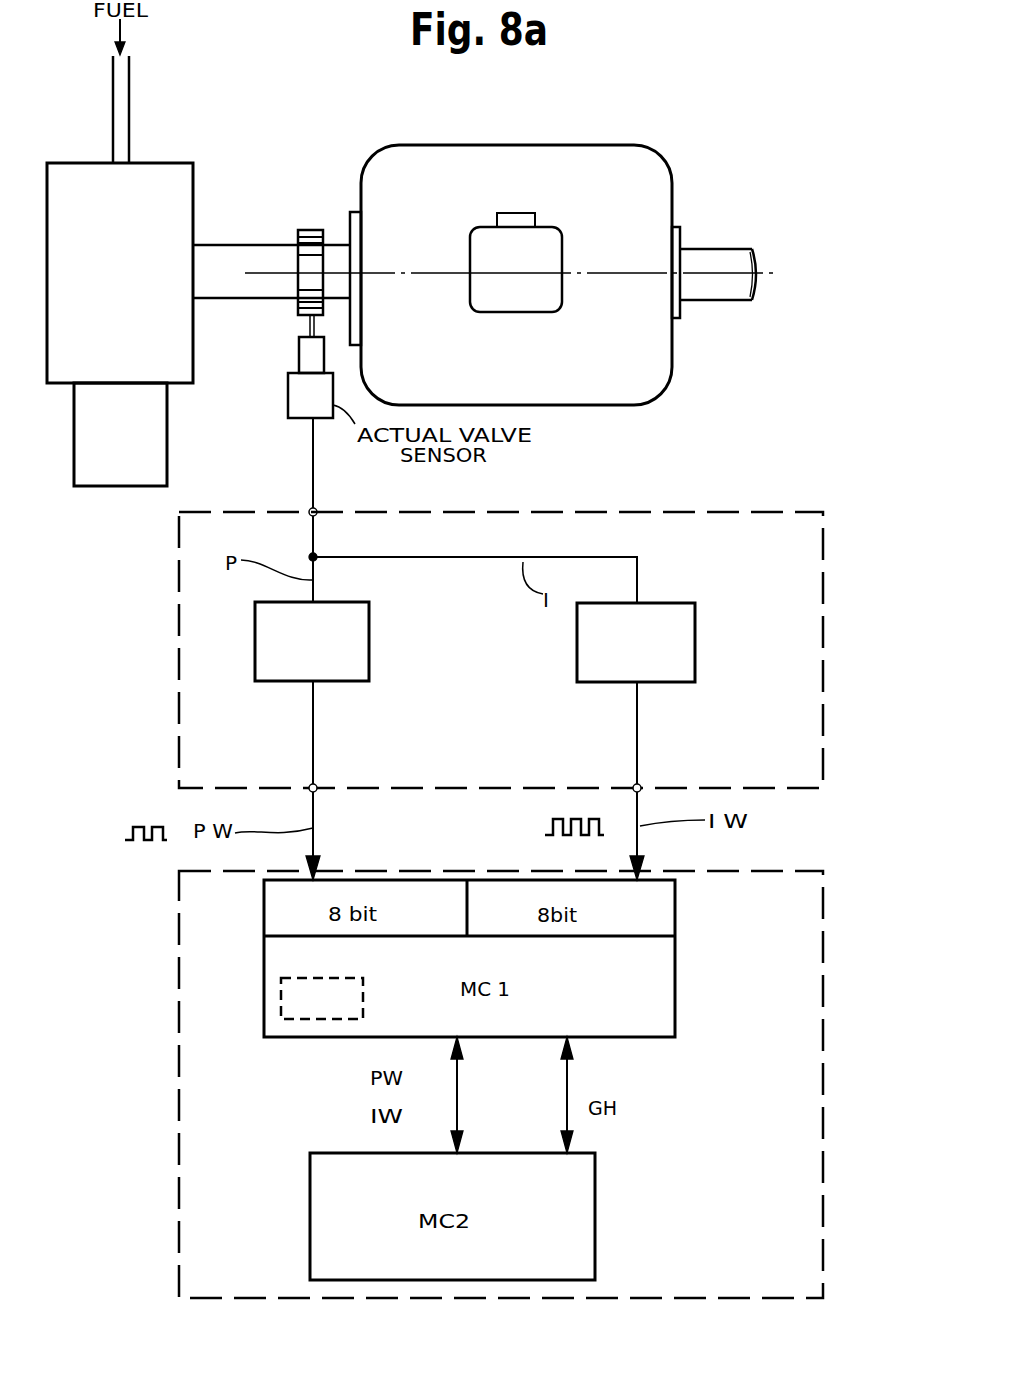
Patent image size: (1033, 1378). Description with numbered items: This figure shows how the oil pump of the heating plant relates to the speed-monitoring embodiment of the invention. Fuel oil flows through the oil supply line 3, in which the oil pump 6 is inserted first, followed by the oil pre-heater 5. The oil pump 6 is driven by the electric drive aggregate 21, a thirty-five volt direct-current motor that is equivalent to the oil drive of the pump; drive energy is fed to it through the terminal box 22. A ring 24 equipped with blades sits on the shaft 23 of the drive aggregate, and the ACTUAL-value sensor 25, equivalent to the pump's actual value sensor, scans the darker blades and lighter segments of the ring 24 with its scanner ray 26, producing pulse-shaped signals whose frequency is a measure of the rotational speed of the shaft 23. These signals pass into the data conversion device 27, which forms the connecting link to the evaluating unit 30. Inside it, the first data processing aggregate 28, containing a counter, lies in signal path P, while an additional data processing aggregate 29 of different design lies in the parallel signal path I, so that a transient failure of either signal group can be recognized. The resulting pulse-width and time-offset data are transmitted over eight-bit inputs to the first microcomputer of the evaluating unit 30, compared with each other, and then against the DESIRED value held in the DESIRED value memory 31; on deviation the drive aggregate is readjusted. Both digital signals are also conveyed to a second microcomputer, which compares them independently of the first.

The oil supply line 3 is at (129, 105).
The oil pre-heater 5 is at (74, 440).
The oil pump 6 is at (165, 163).
The electric drive aggregate 21 is at (643, 381).
The terminal box 22 is at (522, 222).
The shaft 23 is at (268, 257).
The ring equipped with blades 24 is at (312, 230).
The ACTUAL-value sensor 25 is at (297, 400).
The scanner ray 26 is at (308, 326).
The data conversion device 27 is at (740, 532).
The data processing aggregate 28 is at (345, 640).
The additional data processing aggregate 29 is at (676, 638).
The evaluating unit 30 is at (797, 888).
The DESIRED value memory 31 is at (322, 998).